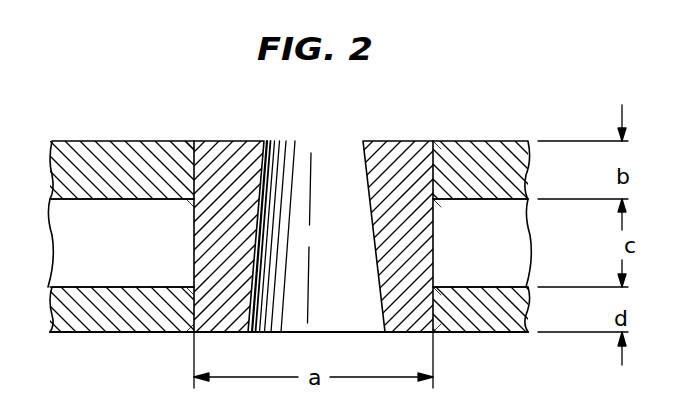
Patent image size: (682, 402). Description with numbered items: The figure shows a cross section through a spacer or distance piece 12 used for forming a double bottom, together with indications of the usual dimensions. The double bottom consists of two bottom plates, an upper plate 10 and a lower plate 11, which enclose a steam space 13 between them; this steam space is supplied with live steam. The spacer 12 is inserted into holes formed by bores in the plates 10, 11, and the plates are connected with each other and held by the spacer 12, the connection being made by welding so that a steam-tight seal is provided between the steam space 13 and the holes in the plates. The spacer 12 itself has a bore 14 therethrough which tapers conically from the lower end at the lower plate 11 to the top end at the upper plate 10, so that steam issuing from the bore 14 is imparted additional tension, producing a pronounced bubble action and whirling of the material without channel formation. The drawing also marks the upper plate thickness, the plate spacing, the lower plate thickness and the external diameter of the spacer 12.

The upper plate 10 is at (97, 160).
The lower plate 11 is at (107, 320).
The spacer 12 is at (393, 160).
The steam space 13 is at (138, 268).
The bore 14 is at (343, 181).